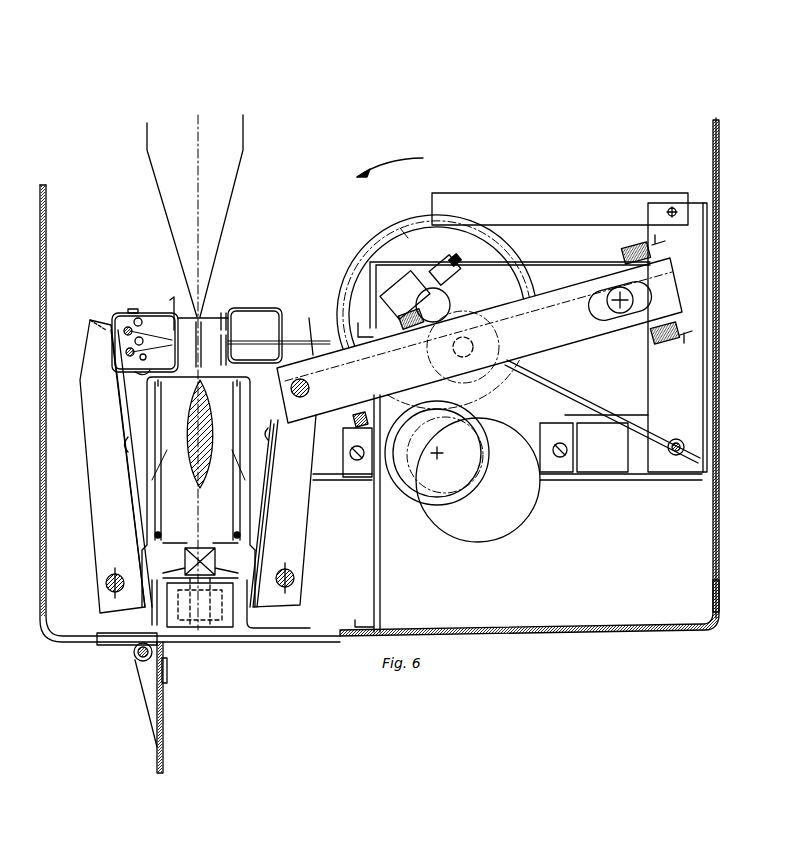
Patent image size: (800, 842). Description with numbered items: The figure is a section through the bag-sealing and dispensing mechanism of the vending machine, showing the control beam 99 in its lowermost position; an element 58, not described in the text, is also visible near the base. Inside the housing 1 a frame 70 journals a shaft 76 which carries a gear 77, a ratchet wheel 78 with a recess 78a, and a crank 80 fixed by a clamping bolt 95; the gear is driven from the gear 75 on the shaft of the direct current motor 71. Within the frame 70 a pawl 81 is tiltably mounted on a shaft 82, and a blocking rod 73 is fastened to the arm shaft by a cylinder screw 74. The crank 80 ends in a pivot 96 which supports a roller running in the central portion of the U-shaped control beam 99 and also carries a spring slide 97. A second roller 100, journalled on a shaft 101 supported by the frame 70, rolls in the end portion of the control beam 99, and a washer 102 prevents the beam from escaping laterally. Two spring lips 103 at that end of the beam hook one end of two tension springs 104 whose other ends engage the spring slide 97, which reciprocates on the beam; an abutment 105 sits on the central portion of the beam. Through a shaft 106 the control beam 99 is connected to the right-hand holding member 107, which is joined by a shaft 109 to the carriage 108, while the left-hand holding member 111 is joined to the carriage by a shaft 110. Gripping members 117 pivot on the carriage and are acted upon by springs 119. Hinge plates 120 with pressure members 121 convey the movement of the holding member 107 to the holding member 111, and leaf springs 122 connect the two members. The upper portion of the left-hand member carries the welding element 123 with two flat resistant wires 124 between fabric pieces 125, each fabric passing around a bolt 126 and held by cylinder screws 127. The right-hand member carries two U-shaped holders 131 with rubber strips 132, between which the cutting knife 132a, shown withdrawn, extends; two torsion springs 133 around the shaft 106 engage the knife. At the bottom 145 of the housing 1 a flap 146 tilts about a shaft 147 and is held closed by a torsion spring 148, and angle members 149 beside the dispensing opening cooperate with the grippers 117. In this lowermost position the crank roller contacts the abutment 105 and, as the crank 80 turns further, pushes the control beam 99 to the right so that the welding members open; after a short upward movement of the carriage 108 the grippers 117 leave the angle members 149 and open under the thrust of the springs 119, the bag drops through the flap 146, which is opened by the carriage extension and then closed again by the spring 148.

The housing 1 is at (40, 478).
The base plate 58 is at (620, 482).
The frame 70 is at (722, 304).
The direct current motor 71 is at (522, 530).
The blocking rod 73 is at (583, 395).
The cylinder screw 74 is at (680, 440).
The gear 75 is at (437, 508).
The shaft 76 is at (450, 296).
The gear 77 is at (370, 240).
The ratchet wheel 78 is at (403, 232).
The recess 78a is at (505, 393).
The crank 80 is at (372, 290).
The pawl 81 is at (515, 198).
The shaft 82 is at (674, 217).
The clamping bolt 95 is at (437, 268).
The pivot 96 is at (433, 365).
The spring slide 97 is at (362, 320).
The U-shaped control beam 99 is at (724, 283).
The second roller 100 is at (668, 266).
The shaft 101 is at (655, 292).
The washer 102 is at (627, 320).
The spring lips 103 is at (660, 236).
The tension springs 104 is at (630, 245).
The abutment 105 is at (479, 340).
The shaft 106 is at (301, 398).
The right-hand holding member 107 is at (303, 520).
The carriage 108 is at (198, 492).
The shaft 109 is at (296, 576).
The shaft 110 is at (106, 588).
The left-hand holding member 111 is at (82, 425).
The gripping members 117 is at (150, 405).
The springs 119 is at (160, 475).
The hinge plates 120 is at (178, 553).
The pressure members 121 is at (186, 627).
The leaf springs 122 is at (122, 446).
The welding element 123 is at (112, 320).
The flat resistant wires 124 is at (174, 306).
The fabric pieces 125 is at (166, 341).
The bolt 126 is at (105, 332).
The cylinder screws 127 is at (133, 310).
The U-shaped holders 131 is at (230, 312).
The rubber strips 132 is at (226, 330).
The cutting knife 132a is at (244, 342).
The torsion springs 133 is at (312, 318).
The bottom 145 is at (548, 633).
The flap 146 is at (164, 758).
The shaft 147 is at (133, 657).
The torsion spring 148 is at (157, 690).
The angle members 149 is at (150, 620).